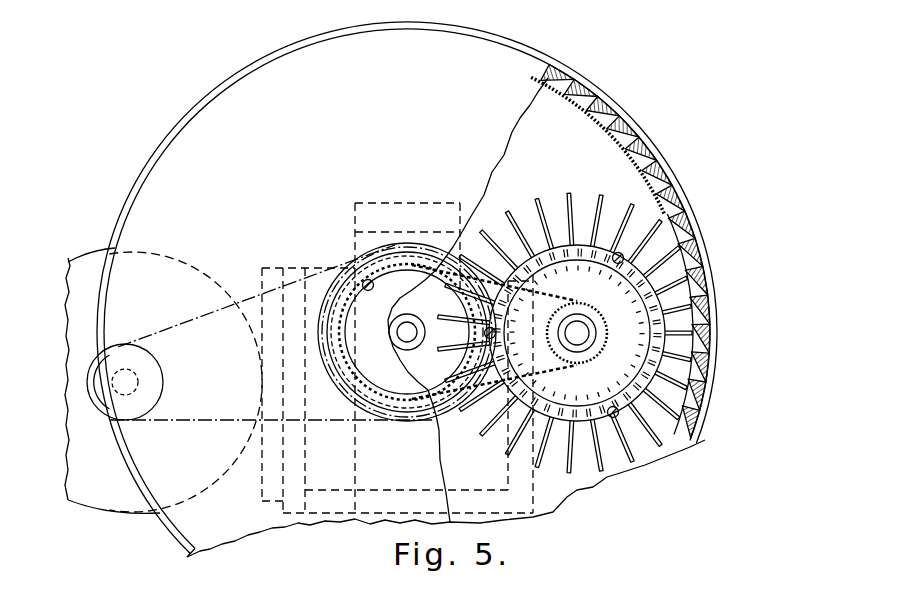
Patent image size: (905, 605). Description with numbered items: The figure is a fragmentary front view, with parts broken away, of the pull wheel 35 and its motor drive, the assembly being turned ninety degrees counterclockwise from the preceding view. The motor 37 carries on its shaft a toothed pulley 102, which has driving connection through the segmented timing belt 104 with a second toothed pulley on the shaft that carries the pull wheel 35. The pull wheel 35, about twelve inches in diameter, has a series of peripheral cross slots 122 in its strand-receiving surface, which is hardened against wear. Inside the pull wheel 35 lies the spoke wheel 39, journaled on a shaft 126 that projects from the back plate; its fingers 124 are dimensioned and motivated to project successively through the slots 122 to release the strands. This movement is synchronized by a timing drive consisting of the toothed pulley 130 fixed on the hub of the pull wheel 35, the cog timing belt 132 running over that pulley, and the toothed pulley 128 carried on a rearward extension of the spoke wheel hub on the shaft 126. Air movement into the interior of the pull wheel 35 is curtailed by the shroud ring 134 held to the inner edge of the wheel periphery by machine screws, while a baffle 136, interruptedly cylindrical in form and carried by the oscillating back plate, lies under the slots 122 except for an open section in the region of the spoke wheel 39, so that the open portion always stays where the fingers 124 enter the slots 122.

The shroud ring 134 is at (212, 90).
The pull wheel 35 is at (197, 111).
The motor 37 is at (95, 250).
The toothed pulley 102 is at (165, 381).
The segmented timing belt 104 is at (329, 264).
The toothed pulley 130 is at (417, 290).
The shaft 126 is at (567, 203).
The toothed pulley 128 is at (586, 368).
The cog timing belt 132 is at (553, 298).
The fingers 124 is at (712, 332).
The peripheral cross slots 122 is at (686, 207).
The baffle 136 is at (615, 152).
The spoke wheel 39 is at (712, 381).